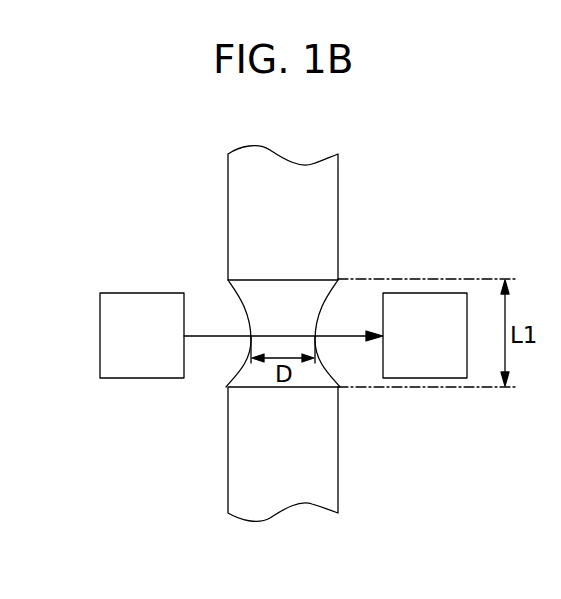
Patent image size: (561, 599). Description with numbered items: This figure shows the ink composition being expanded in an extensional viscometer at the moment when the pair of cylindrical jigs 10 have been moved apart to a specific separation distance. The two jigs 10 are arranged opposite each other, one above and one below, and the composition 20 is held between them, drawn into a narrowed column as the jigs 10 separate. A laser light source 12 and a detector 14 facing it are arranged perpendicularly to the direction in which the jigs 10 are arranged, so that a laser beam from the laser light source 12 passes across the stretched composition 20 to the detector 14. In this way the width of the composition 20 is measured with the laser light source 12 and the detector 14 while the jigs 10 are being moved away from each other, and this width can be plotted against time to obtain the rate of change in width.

The cylindrical jig 10 is at (338, 176).
The laser light source 12 is at (148, 293).
The detector 14 is at (430, 293).
The composition 20 is at (228, 380).